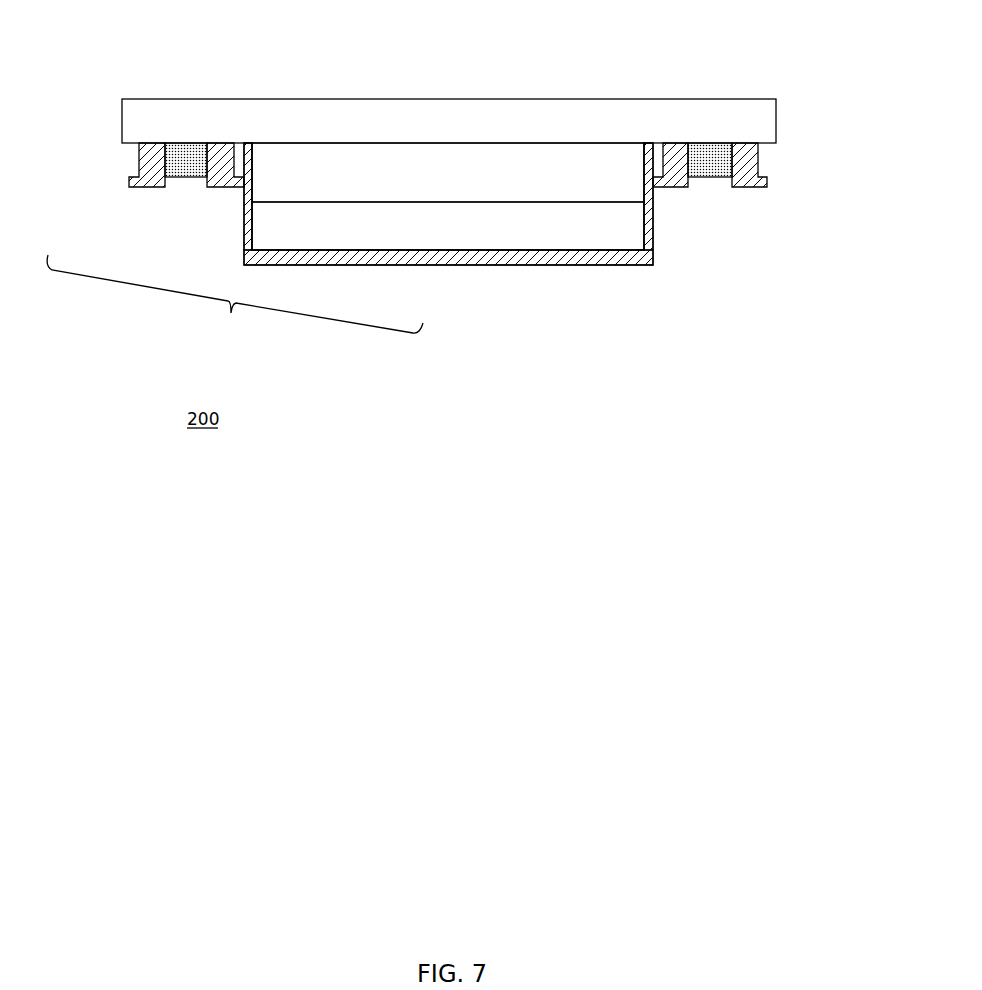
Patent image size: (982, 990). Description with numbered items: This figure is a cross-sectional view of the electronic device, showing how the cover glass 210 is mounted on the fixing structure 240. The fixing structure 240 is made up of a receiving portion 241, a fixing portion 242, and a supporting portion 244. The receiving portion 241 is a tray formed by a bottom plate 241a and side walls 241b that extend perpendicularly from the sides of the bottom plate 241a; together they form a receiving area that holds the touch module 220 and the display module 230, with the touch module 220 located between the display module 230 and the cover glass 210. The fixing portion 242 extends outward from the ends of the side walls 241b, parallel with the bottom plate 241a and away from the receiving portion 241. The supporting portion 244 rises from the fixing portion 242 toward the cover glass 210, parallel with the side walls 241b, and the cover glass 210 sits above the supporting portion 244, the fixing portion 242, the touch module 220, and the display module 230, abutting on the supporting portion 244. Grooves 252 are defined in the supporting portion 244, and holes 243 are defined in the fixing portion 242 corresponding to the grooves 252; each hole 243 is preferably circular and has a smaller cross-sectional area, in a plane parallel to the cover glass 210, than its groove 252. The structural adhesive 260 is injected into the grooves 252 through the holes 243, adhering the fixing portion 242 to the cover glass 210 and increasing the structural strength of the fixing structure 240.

The cover glass 210 is at (776, 125).
The touch module 220 is at (538, 167).
The display module 230 is at (540, 225).
The fixing structure 240 is at (235, 302).
The receiving portion 241 is at (485, 252).
The bottom plate 241a is at (608, 265).
The side walls 241b is at (655, 225).
The fixing portion 242 is at (217, 190).
The holes 243 is at (181, 205).
The supporting portion 244 is at (139, 156).
The grooves 252 is at (182, 139).
The structural adhesive 260 is at (198, 148).